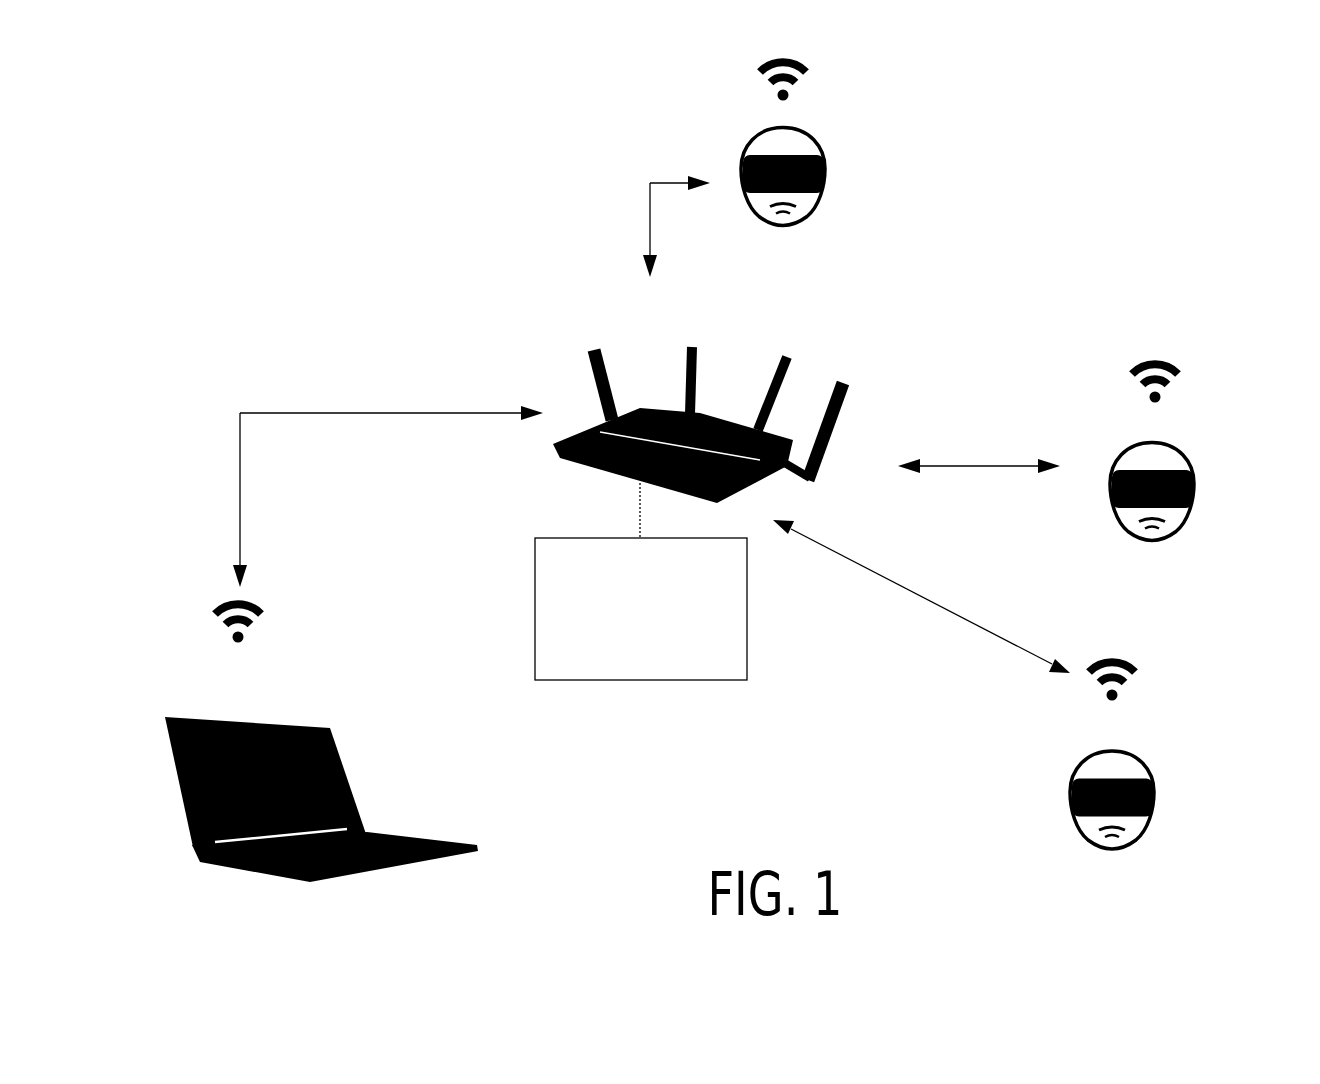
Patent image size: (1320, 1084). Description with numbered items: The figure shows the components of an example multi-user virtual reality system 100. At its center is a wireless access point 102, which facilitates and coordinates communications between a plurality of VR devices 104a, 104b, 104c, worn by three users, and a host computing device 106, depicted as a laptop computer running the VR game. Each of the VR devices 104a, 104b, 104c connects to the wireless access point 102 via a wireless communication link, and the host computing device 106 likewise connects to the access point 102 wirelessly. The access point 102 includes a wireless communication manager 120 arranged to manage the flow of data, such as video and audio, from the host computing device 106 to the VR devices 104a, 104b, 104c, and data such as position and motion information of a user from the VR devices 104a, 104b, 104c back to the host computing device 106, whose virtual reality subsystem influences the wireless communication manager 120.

The multi-user virtual reality (VR) system 100 is at (370, 199).
The wireless access point 102 is at (561, 457).
The VR device 104a is at (825, 173).
The VR device 104b is at (1193, 478).
The VR device 104c is at (1153, 793).
The host computing device 106 is at (193, 826).
The wireless communication manager 120 is at (641, 581).